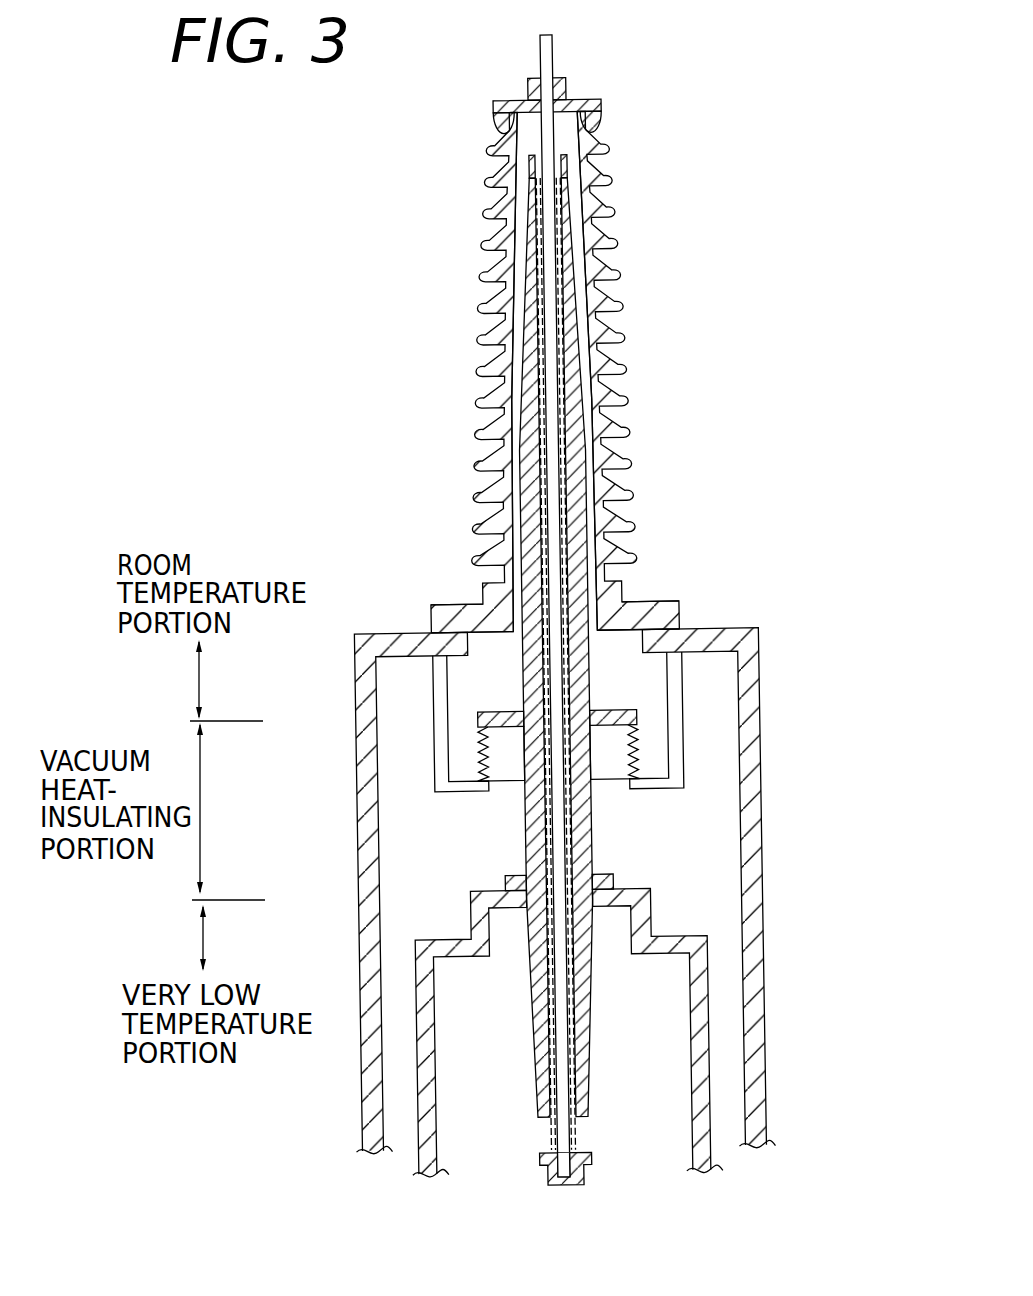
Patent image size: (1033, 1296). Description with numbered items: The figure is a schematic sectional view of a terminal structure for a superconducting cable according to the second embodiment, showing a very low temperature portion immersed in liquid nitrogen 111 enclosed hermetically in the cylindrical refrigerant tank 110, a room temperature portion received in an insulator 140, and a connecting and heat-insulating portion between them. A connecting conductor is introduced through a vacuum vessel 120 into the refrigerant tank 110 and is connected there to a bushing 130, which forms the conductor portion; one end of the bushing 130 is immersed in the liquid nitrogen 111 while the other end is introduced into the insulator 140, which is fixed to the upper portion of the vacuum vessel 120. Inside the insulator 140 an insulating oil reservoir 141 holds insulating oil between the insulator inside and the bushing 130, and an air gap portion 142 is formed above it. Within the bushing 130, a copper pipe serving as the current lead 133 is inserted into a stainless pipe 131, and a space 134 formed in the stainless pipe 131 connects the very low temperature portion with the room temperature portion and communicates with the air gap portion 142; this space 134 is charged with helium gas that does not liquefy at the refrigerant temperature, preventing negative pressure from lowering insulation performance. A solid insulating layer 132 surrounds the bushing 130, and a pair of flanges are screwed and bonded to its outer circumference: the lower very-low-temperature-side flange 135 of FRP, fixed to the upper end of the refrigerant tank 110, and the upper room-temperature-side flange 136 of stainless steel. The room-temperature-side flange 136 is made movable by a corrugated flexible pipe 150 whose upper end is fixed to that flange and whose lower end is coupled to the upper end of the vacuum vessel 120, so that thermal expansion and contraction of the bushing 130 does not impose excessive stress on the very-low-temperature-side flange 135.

The refrigerant tank 110 is at (706, 1118).
The liquid nitrogen 111 is at (669, 1030).
The vacuum vessel 120 is at (758, 724).
The bushing 130 is at (606, 658).
The stainless pipe 131 is at (562, 164).
The solid insulating layer 132 is at (576, 367).
The current lead 133 is at (553, 54).
The space 134 is at (538, 388).
The very-low-temperature-side flange 135 is at (606, 876).
The room-temperature-side flange 136 is at (501, 715).
The insulator 140 is at (484, 241).
The insulating oil reservoir 141 is at (568, 188).
The air gap portion 142 is at (528, 142).
The corrugated flexible pipe 150 is at (638, 753).